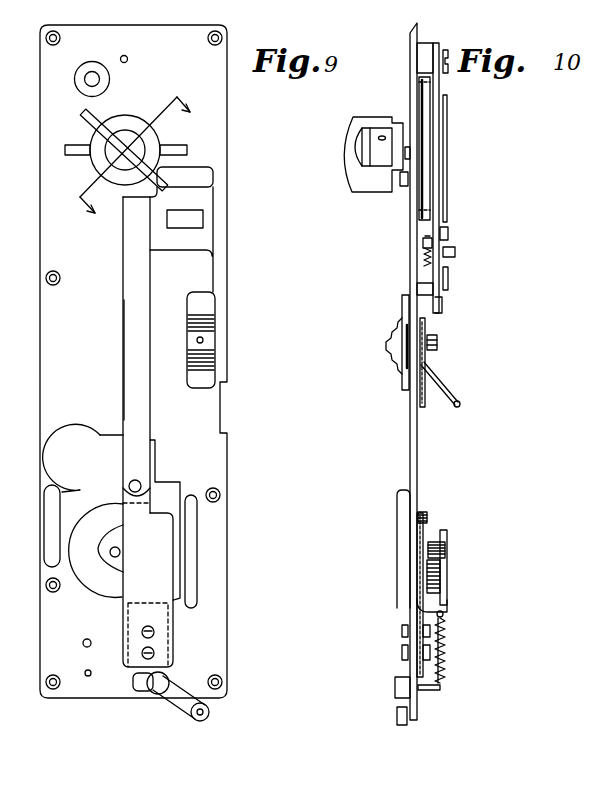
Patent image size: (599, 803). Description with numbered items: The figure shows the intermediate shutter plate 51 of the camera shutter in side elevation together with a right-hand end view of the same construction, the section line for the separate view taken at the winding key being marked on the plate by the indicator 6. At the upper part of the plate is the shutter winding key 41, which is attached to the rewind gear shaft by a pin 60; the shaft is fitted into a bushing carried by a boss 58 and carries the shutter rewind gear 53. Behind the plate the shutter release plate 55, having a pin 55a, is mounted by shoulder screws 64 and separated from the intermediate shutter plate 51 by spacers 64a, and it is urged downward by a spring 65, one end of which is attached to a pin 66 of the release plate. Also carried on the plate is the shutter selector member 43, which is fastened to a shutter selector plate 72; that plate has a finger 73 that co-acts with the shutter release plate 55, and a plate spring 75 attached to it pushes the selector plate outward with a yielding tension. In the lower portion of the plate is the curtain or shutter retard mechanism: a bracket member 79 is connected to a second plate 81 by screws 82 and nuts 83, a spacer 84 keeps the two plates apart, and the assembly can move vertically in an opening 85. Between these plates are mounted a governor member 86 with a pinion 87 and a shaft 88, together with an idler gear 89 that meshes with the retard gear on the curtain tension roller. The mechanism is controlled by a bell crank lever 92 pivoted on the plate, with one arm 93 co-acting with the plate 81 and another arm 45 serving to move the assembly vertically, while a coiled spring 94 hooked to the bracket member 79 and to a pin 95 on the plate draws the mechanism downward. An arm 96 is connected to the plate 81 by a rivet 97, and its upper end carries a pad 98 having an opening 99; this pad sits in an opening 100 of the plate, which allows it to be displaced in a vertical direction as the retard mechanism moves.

In FIG. 9, the intermediate shutter plate 51 is at (221, 145).
In FIG. 10, the intermediate shutter plate 51 is at (418, 448).
In FIG. 9, the shutter winding key 41 is at (92, 165).
In FIG. 10, the shutter winding key 41 is at (363, 136).
In FIG. 9, the section line 6- 6 is at (141, 168).
In FIG. 9, the opening 100 is at (203, 181).
In FIG. 9, the opening 99 is at (204, 221).
In FIG. 9, the pad 98 is at (207, 246).
In FIG. 9, the arm 96 is at (128, 327).
In FIG. 9, the shutter selector member 43 is at (210, 339).
In FIG. 10, the shutter selector member 43 is at (392, 341).
In FIG. 9, the rivet 97 is at (128, 487).
In FIG. 9, the second plate 81 is at (120, 573).
In FIG. 10, the second plate 81 is at (407, 613).
In FIG. 9, the opening 85 is at (140, 607).
In FIG. 9, the spacer 84 is at (164, 624).
In FIG. 9, the screws 82 is at (162, 641).
In FIG. 9, the arm 93 is at (131, 683).
In FIG. 9, the bell crank lever 92 is at (157, 692).
In FIG. 10, the bell crank lever 92 is at (395, 688).
In FIG. 9, the arm 45 is at (180, 710).
In FIG. 10, the arm 45 is at (397, 717).
In FIG. 10, the spacers 64a is at (428, 46).
In FIG. 10, the shoulder screws 64 is at (447, 65).
In FIG. 10, the pin 60 is at (383, 134).
In FIG. 10, the shutter rewind gear 53 is at (428, 162).
In FIG. 10, the boss 58 is at (400, 186).
In FIG. 10, the shutter release plate 55 is at (442, 238).
In FIG. 10, the pin 55a is at (452, 254).
In FIG. 10, the pin 66 is at (423, 244).
In FIG. 10, the spring 65 is at (425, 262).
In FIG. 10, the finger 73 is at (438, 343).
In FIG. 10, the plate spring 75 is at (448, 388).
In FIG. 10, the shutter selector plate 72 is at (427, 400).
In FIG. 10, the governor member 86 is at (428, 518).
In FIG. 10, the pinion 87 is at (435, 533).
In FIG. 10, the shaft 88 is at (447, 552).
In FIG. 10, the idler gear 89 is at (440, 582).
In FIG. 10, the bracket member 79 is at (448, 605).
In FIG. 10, the nuts 83 is at (445, 643).
In FIG. 10, the coiled spring 94 is at (447, 662).
In FIG. 10, the pin 95 is at (425, 690).